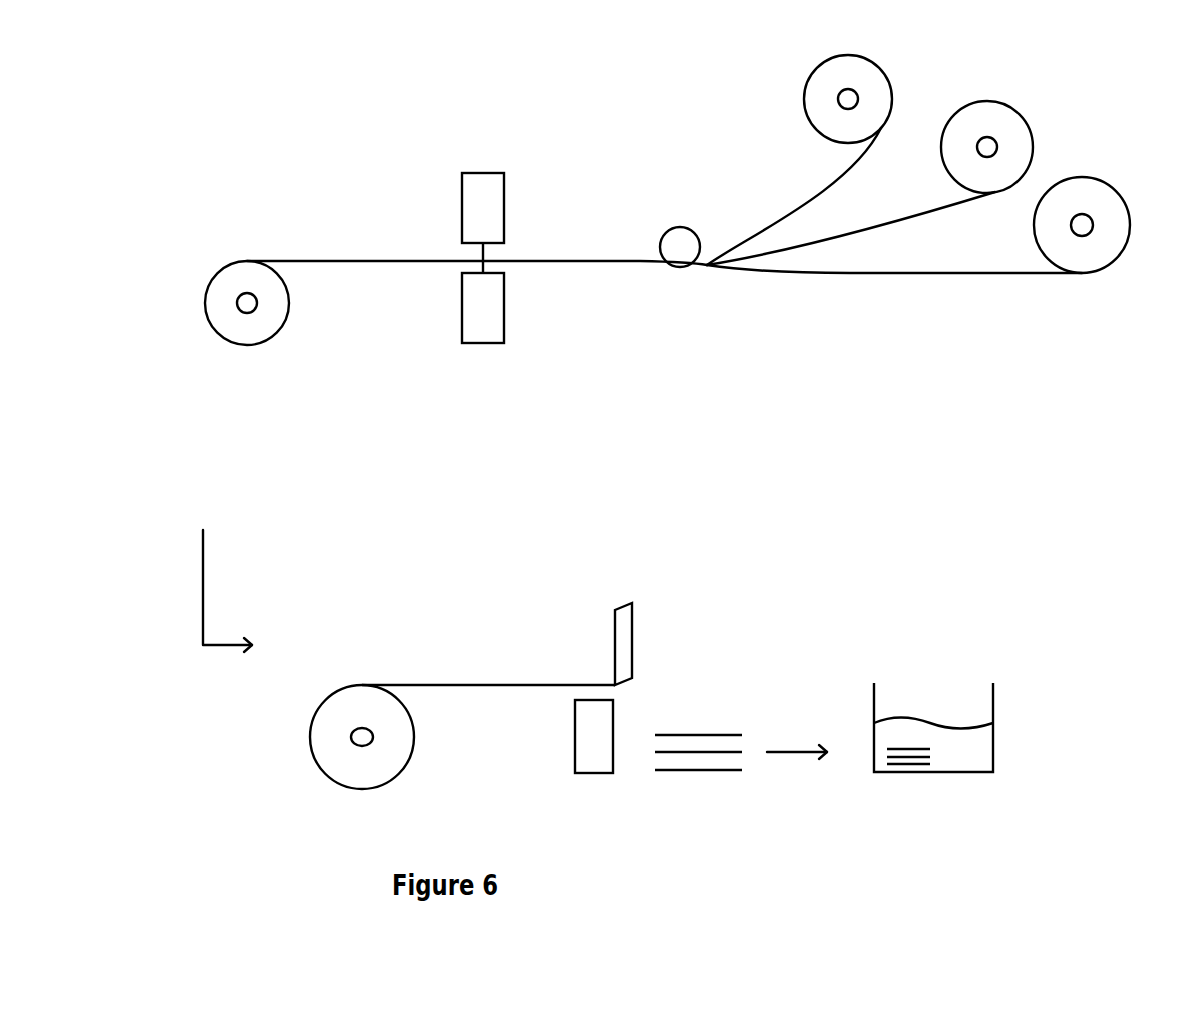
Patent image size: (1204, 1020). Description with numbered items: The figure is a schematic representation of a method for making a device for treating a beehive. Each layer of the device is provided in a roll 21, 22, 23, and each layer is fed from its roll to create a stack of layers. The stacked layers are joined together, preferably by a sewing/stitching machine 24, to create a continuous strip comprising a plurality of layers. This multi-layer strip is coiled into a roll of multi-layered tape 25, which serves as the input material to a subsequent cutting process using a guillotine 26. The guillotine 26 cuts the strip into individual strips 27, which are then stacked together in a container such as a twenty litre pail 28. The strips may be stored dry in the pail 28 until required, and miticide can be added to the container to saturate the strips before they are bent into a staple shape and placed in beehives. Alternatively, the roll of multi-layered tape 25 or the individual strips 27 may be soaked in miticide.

The roll 21 is at (857, 78).
The roll 22 is at (990, 118).
The roll 23 is at (1102, 202).
The sewing/stitching machine 24 is at (483, 190).
The roll of multi-layered tape 25 is at (240, 283).
The guillotine 26 is at (623, 635).
The individual strips 27 is at (622, 722).
The pail 28 is at (1007, 707).